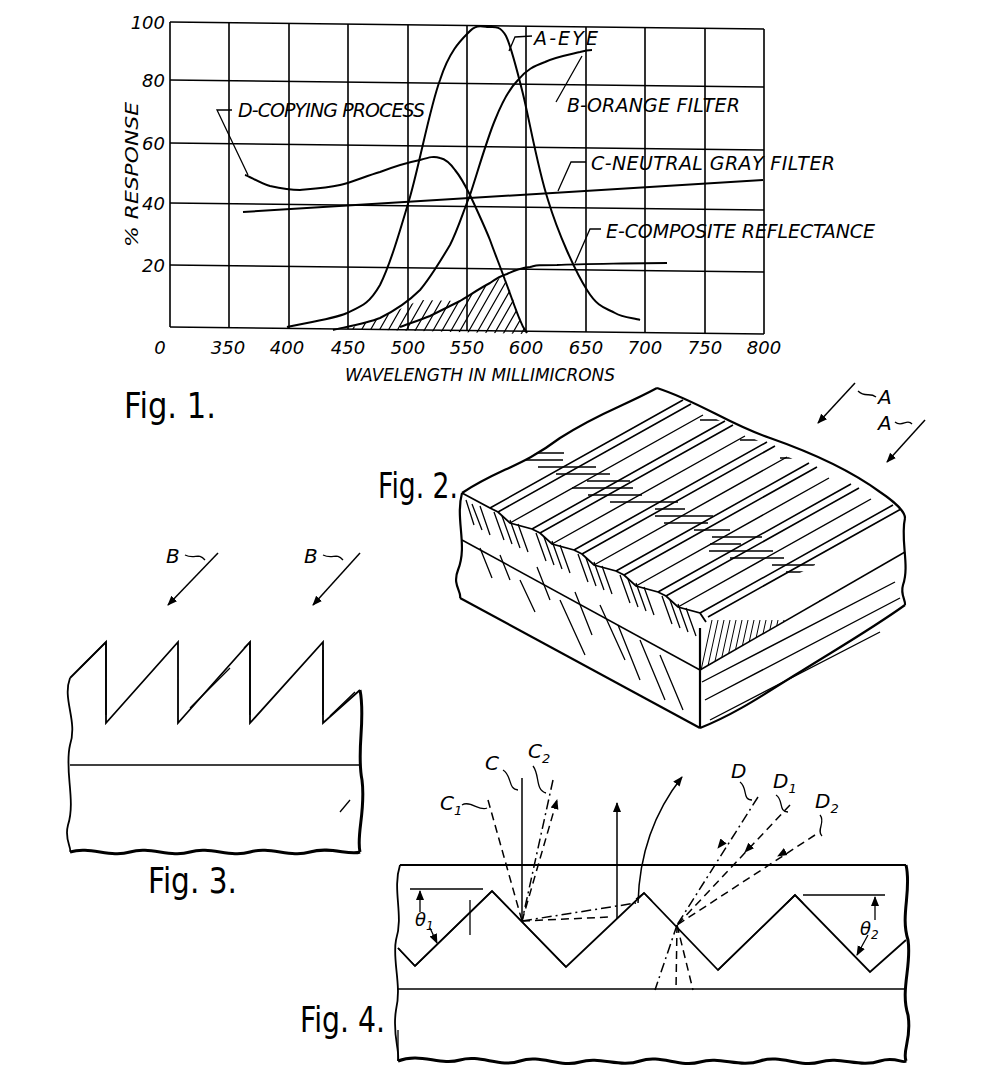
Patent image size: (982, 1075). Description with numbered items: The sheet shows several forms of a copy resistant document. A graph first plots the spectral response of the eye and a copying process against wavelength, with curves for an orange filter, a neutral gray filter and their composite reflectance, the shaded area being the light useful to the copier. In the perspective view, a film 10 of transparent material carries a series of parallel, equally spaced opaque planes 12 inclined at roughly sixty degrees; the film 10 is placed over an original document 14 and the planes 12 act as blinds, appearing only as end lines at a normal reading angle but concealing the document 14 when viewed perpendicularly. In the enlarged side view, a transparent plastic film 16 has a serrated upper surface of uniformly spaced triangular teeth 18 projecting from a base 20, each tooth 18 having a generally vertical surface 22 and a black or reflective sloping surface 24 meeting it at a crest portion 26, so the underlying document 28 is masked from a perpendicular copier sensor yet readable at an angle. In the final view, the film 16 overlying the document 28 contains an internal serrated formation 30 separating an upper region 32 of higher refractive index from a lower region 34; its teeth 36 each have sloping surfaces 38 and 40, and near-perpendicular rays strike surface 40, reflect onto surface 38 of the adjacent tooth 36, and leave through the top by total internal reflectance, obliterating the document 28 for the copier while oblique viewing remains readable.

In FIG. 2, the film 10 is at (531, 468).
In FIG. 2, the opaque planes 12 is at (525, 570).
In FIG. 2, the original document 14 is at (632, 680).
In FIG. 3, the transparent plastic film 16 is at (366, 758).
In FIG. 4, the transparent plastic film 16 is at (398, 968).
In FIG. 3, the teeth 18 is at (140, 715).
In FIG. 3, the base 20 is at (215, 755).
In FIG. 3, the vertical surface 22 is at (108, 672).
In FIG. 3, the sloping surface 24 is at (90, 660).
In FIG. 3, the crest portion 26 is at (106, 641).
In FIG. 3, the document 28 is at (343, 808).
In FIG. 4, the document 28 is at (408, 1042).
In FIG. 4, the internal serrated formation 30 is at (418, 952).
In FIG. 4, the upper region 32 is at (468, 900).
In FIG. 4, the lower region 34 is at (420, 975).
In FIG. 4, the teeth 36 is at (495, 957).
In FIG. 4, the sloping surface 38 is at (443, 903).
In FIG. 4, the sloping surface 40 is at (660, 900).